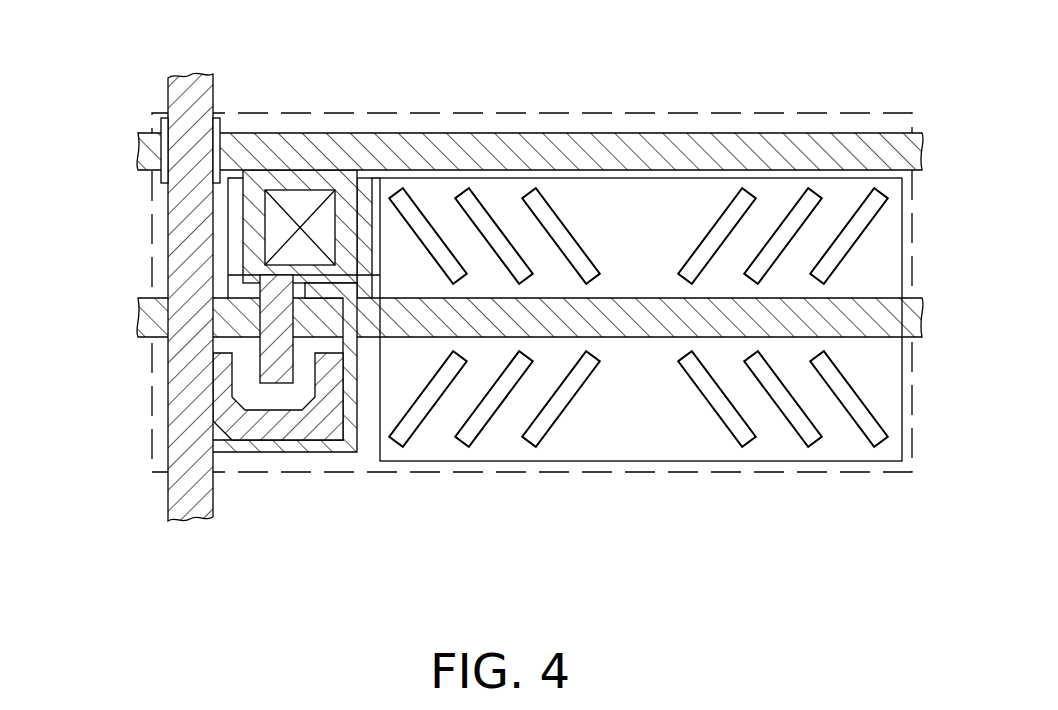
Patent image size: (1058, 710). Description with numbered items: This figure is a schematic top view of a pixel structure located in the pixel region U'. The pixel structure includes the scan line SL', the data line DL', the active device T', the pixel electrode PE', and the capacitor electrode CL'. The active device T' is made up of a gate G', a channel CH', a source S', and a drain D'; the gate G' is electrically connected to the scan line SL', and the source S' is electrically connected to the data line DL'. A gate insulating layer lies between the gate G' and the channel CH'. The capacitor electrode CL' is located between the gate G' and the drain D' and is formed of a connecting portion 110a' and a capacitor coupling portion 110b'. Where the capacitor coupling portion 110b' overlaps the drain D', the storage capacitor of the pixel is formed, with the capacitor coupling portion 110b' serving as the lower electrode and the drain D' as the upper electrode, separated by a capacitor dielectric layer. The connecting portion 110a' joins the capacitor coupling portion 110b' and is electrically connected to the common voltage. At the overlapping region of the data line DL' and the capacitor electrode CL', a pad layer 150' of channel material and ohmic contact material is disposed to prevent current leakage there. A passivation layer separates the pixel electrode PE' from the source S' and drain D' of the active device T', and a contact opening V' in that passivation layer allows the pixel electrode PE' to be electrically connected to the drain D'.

The data line DL' is at (190, 263).
The pad layer 150' is at (147, 138).
The contact opening V' is at (300, 164).
The capacitor electrode CL' is at (530, 159).
The connecting portion 110a' is at (530, 113).
The capacitor coupling portion 110b' is at (336, 183).
The scan line SL' is at (496, 318).
The pixel electrode PE' is at (565, 368).
The pixel region U' is at (532, 346).
The active device T' is at (284, 431).
The source S' is at (278, 445).
The drain D' is at (275, 406).
The channel CH' is at (286, 438).
The gate G' is at (284, 410).